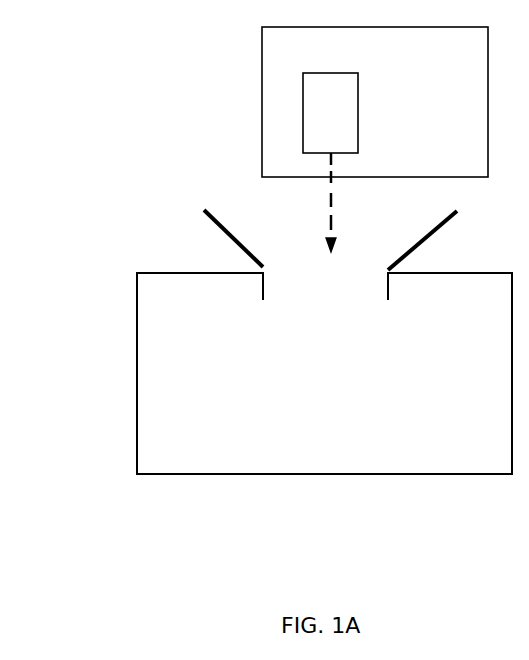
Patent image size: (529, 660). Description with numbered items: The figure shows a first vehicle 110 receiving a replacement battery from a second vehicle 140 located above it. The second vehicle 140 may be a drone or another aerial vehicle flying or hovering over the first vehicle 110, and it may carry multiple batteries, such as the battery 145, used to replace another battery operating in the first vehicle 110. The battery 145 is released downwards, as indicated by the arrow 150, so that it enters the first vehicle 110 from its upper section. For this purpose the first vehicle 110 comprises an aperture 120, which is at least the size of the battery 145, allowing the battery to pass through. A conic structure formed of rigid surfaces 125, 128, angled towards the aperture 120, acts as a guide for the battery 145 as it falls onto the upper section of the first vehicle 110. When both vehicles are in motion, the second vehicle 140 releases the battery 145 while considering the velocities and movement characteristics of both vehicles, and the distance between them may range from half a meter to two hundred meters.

The first vehicle 110 is at (160, 355).
The aperture 120 is at (309, 275).
The rigid surface 125 is at (213, 238).
The rigid surface 128 is at (423, 248).
The second vehicle 140 is at (278, 60).
The battery 145 is at (300, 125).
The arrow 150 is at (319, 200).